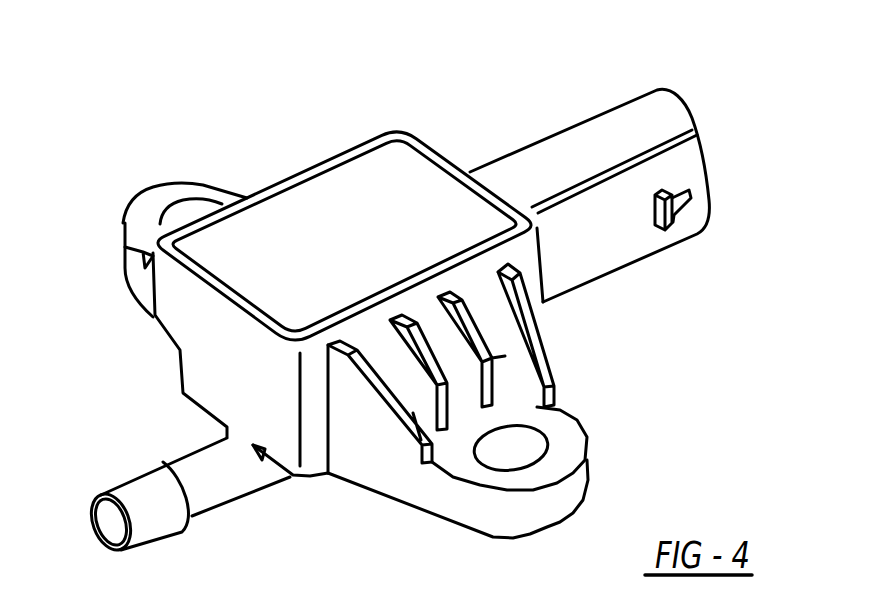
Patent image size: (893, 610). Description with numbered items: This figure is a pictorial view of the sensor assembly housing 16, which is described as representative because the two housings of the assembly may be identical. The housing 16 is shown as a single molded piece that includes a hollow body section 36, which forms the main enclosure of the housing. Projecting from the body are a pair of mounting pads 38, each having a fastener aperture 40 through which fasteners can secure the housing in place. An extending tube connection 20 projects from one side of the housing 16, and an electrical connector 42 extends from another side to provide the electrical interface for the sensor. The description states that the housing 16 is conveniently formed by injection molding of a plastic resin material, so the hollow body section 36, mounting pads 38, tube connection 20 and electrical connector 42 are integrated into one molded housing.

The sensor assembly housing 16 is at (327, 150).
The extending tube connection 20 is at (124, 485).
The hollow body section 36 is at (380, 240).
The mounting pads 38 is at (147, 213).
The fastener apertures 40 is at (187, 207).
The electrical connector 42 is at (557, 133).